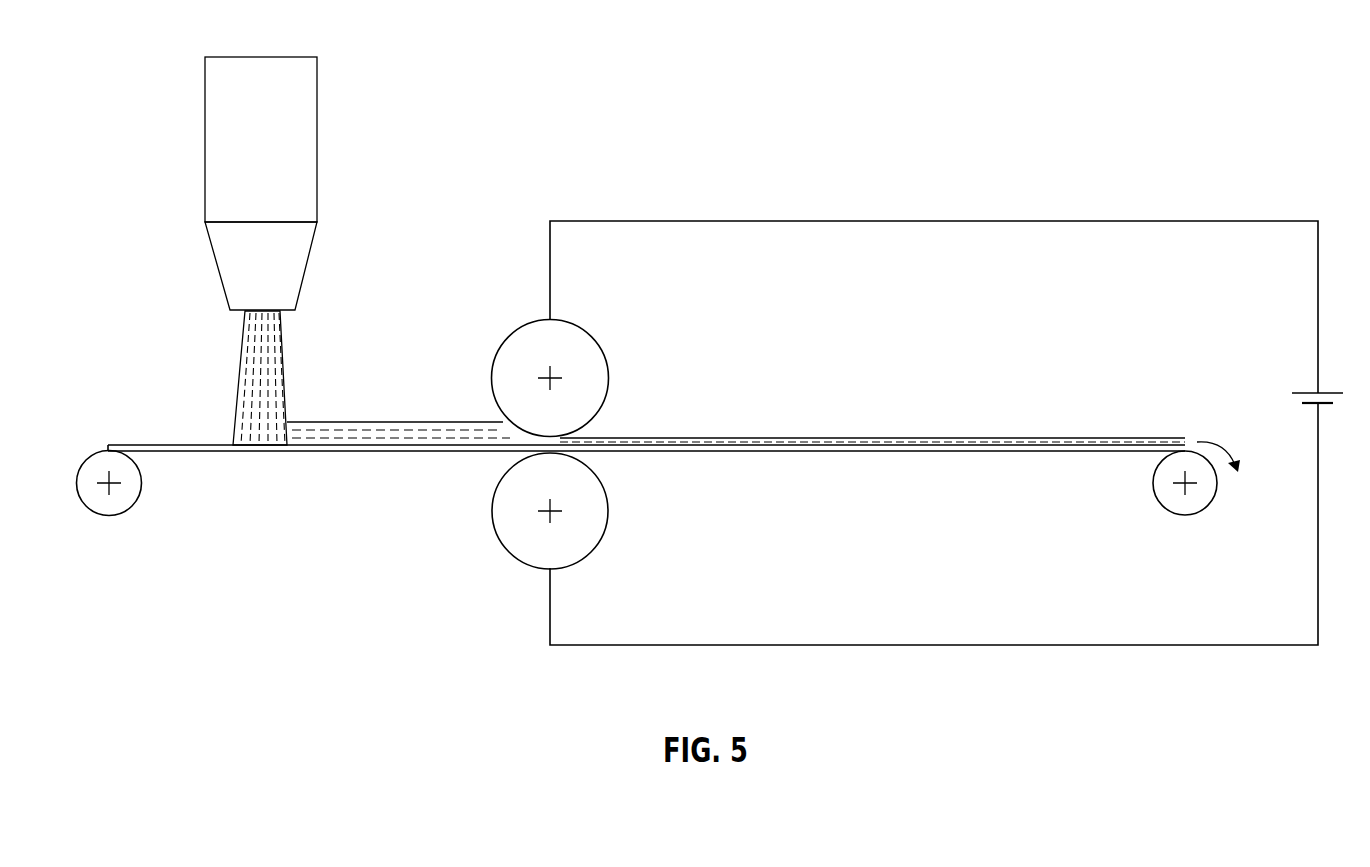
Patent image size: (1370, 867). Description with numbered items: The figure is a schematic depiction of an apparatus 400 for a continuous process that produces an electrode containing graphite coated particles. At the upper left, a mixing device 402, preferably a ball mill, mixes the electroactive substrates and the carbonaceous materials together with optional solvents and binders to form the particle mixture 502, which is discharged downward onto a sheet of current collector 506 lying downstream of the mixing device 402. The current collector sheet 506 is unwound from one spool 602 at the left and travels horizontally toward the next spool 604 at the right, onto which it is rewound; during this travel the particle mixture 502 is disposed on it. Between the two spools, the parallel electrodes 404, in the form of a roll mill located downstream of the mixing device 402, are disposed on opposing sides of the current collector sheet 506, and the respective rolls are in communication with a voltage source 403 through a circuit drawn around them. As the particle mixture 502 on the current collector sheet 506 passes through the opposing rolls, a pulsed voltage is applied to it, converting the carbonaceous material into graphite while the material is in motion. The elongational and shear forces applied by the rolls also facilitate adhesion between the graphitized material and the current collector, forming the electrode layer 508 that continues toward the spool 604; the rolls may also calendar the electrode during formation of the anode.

The apparatus 400 is at (1062, 96).
The mixing device 402 is at (303, 146).
The voltage source 403 is at (1325, 407).
The parallel electrodes 404 is at (610, 378).
The particle mixture 502 is at (248, 370).
The current collector sheet 506 is at (333, 453).
The electrode coating layer 508 is at (770, 437).
The spool 602 is at (110, 515).
The spool 604 is at (1183, 517).